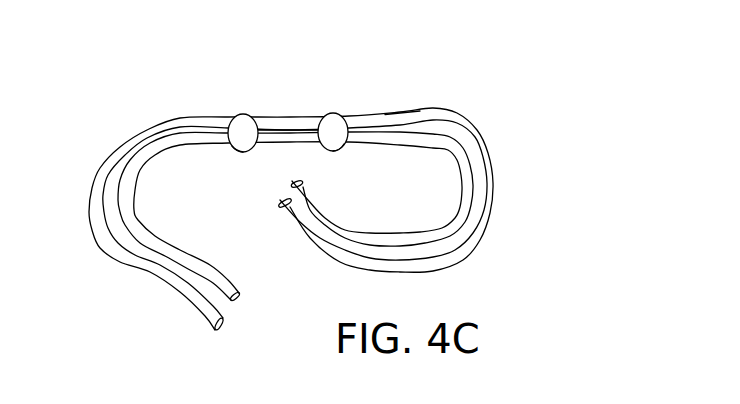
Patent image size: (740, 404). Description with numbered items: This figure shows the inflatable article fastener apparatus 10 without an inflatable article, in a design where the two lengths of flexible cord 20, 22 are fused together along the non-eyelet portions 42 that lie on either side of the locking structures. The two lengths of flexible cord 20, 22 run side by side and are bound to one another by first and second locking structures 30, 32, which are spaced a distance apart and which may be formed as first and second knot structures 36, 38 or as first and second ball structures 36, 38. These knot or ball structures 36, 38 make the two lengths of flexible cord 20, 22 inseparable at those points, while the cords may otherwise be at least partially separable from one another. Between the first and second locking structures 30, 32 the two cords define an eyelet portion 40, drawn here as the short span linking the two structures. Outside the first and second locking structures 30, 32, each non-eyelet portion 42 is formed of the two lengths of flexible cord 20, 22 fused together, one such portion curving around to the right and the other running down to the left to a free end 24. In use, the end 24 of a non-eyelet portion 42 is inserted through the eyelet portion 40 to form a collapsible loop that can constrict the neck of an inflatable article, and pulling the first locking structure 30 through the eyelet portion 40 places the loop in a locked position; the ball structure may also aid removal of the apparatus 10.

The inflatable article fastener apparatus 10 is at (341, 172).
The length of flexible cord 20 is at (473, 233).
The length of flexible cord 22 is at (467, 190).
The end of the non-eyelet portion 24 is at (223, 330).
The first locking structure 30 is at (334, 152).
The second locking structure 32 is at (233, 152).
The first knot structure or ball structure 36 is at (248, 123).
The second knot structure or ball structure 38 is at (333, 123).
The eyelet portion 40 is at (285, 128).
The non-eyelet portion 42 is at (404, 125).